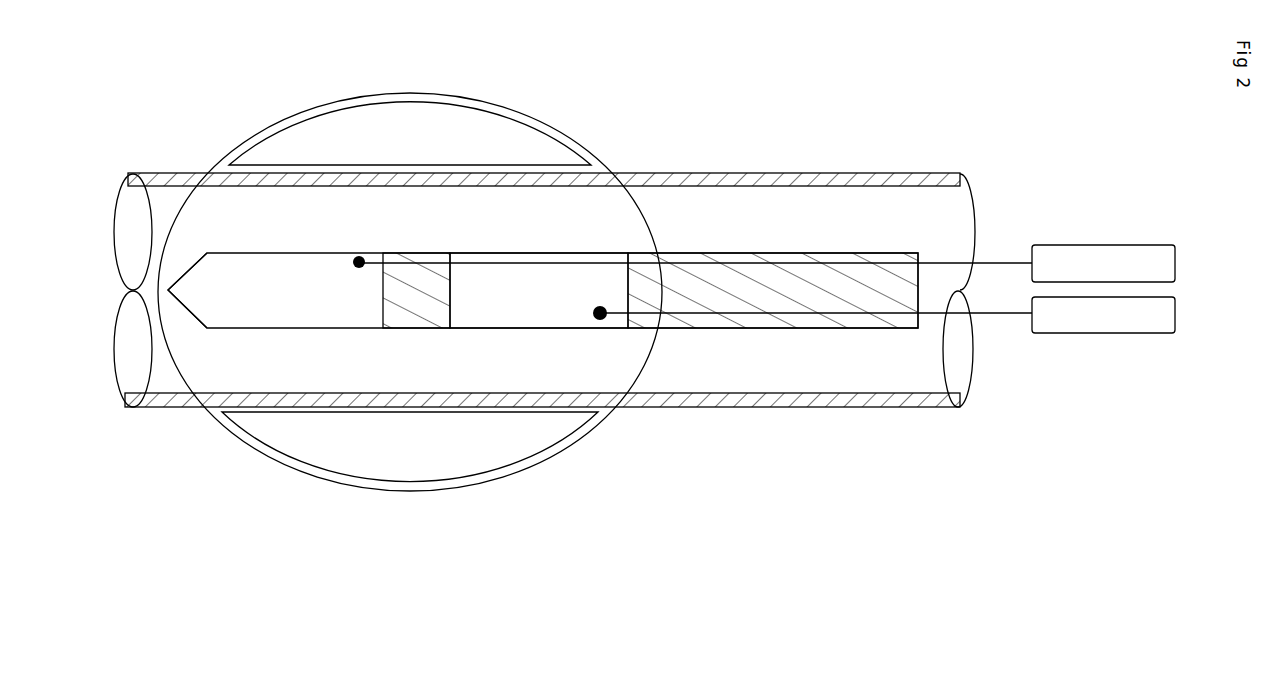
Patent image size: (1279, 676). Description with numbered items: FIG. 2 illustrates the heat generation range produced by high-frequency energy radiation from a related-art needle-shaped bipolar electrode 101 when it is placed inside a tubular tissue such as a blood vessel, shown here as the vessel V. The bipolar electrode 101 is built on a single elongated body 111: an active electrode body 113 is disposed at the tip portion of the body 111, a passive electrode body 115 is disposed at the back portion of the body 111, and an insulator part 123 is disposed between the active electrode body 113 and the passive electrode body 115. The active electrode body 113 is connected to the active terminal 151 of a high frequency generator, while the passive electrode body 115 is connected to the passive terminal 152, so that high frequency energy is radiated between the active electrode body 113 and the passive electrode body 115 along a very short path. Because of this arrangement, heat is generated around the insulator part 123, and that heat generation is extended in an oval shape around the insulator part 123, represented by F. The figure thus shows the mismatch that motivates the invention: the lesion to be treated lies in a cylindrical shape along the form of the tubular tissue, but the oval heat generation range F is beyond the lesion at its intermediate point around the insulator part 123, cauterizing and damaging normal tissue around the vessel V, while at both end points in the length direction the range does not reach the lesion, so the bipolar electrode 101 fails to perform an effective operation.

The bipolar electrode 101 is at (768, 166).
The body 111 is at (819, 252).
The active electrode body 113 is at (213, 255).
The passive electrode body 115 is at (522, 278).
The insulator part 123 is at (405, 285).
The active terminal 151 is at (1102, 245).
The passive terminal 152 is at (1108, 335).
The heat generation range F is at (313, 110).
The vessel V is at (718, 172).